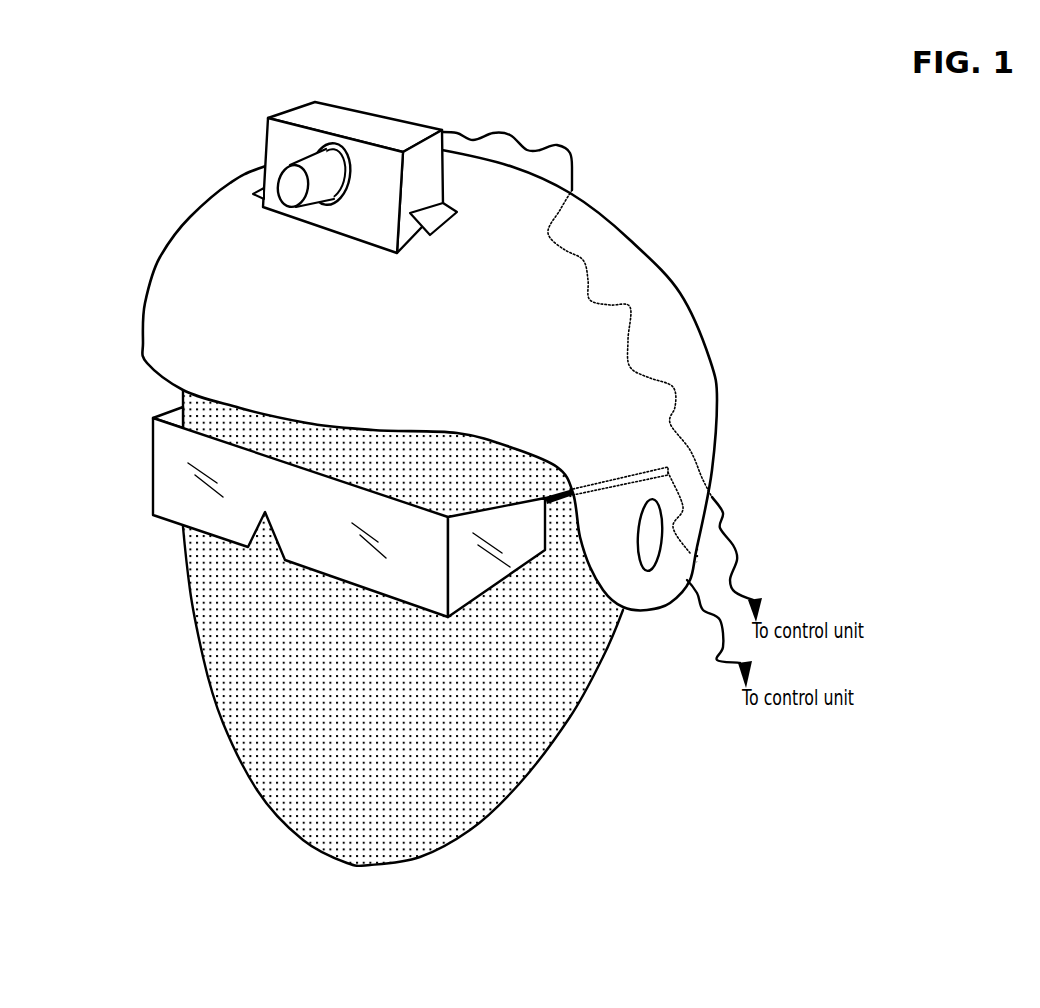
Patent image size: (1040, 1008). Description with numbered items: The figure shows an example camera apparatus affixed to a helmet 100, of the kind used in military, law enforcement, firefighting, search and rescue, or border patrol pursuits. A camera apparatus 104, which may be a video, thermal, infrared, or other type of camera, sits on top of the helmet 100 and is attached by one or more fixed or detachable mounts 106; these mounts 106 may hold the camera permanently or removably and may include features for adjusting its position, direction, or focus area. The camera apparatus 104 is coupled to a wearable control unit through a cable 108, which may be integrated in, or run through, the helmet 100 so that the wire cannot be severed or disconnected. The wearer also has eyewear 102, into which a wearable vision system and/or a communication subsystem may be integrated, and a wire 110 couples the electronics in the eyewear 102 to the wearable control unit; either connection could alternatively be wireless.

The helmet 100 is at (164, 251).
The eyewear 102 is at (149, 433).
The camera apparatus 104 is at (296, 108).
The mounts 106 is at (452, 219).
The cable 108 is at (573, 160).
The wire 110 is at (702, 607).